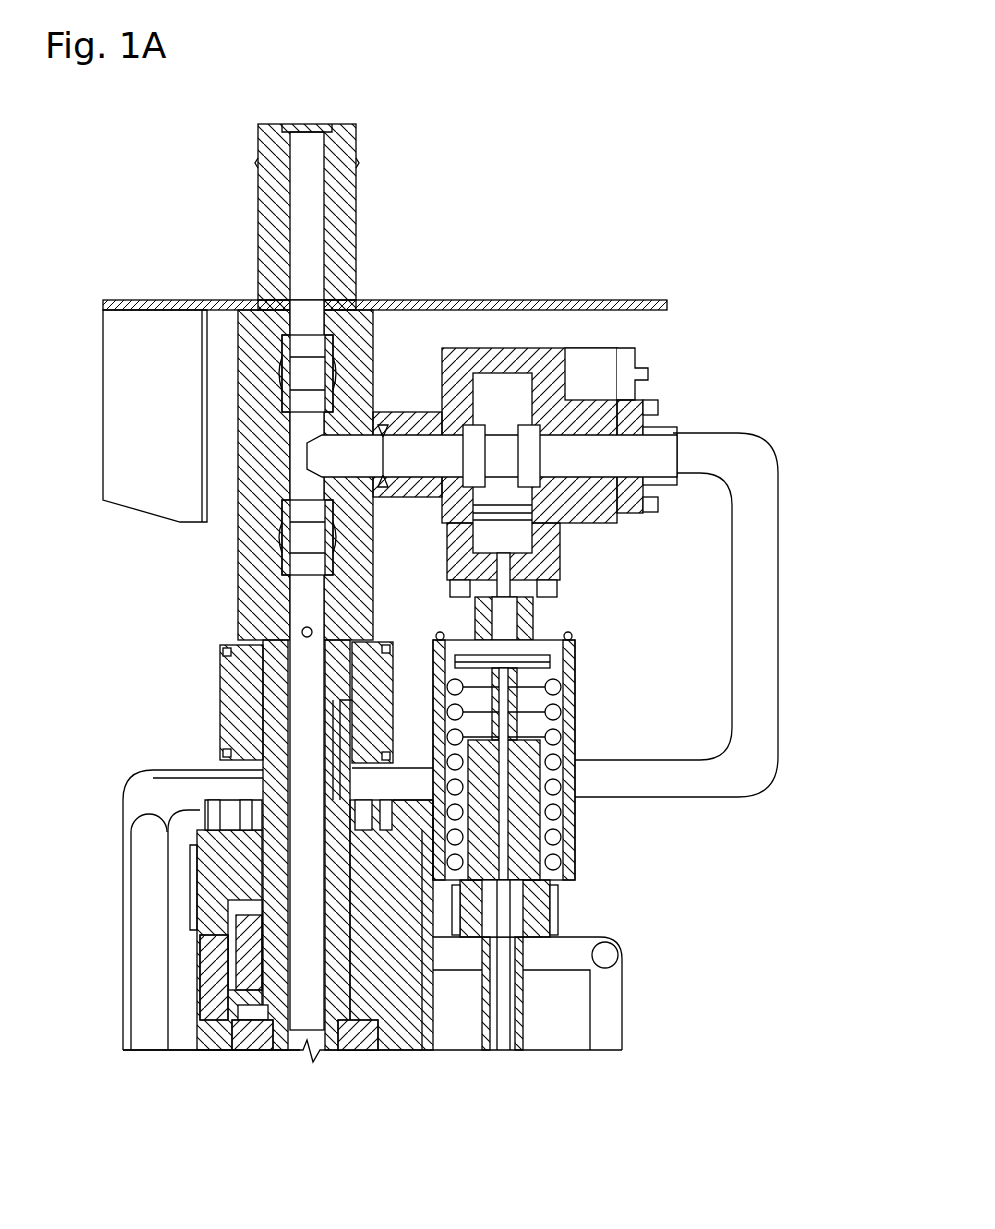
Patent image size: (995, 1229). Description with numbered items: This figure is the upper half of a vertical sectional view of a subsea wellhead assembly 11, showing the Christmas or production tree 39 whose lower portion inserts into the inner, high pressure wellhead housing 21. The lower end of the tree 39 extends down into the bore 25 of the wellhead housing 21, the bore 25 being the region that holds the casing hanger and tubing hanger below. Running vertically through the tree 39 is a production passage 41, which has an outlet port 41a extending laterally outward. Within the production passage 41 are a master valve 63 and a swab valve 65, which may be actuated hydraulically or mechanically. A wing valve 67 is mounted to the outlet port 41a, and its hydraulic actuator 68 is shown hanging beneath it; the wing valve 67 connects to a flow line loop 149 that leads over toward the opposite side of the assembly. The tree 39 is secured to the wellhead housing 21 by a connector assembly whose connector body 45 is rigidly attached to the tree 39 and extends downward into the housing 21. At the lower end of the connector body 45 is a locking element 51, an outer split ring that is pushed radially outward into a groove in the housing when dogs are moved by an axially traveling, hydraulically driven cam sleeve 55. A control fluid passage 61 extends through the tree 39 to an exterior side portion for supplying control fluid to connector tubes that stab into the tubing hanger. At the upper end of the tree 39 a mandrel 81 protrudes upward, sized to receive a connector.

The wellhead assembly 11 is at (150, 730).
The inner wellhead housing 21 is at (393, 1035).
The bore 25 is at (230, 972).
The production tree 39 is at (270, 586).
The production passage 41 is at (300, 612).
The outlet port 41a is at (382, 430).
The connector body 45 is at (215, 862).
The locking element 51 is at (252, 1022).
The cam sleeve 55 is at (215, 902).
The control fluid passage 61 is at (350, 722).
The master valve 63 is at (278, 532).
The swab valve 65 is at (280, 372).
The wing valve 67 is at (665, 410).
The hydraulic actuator 68 is at (578, 710).
The mandrel 81 is at (358, 140).
The return pipe 149 is at (783, 548).